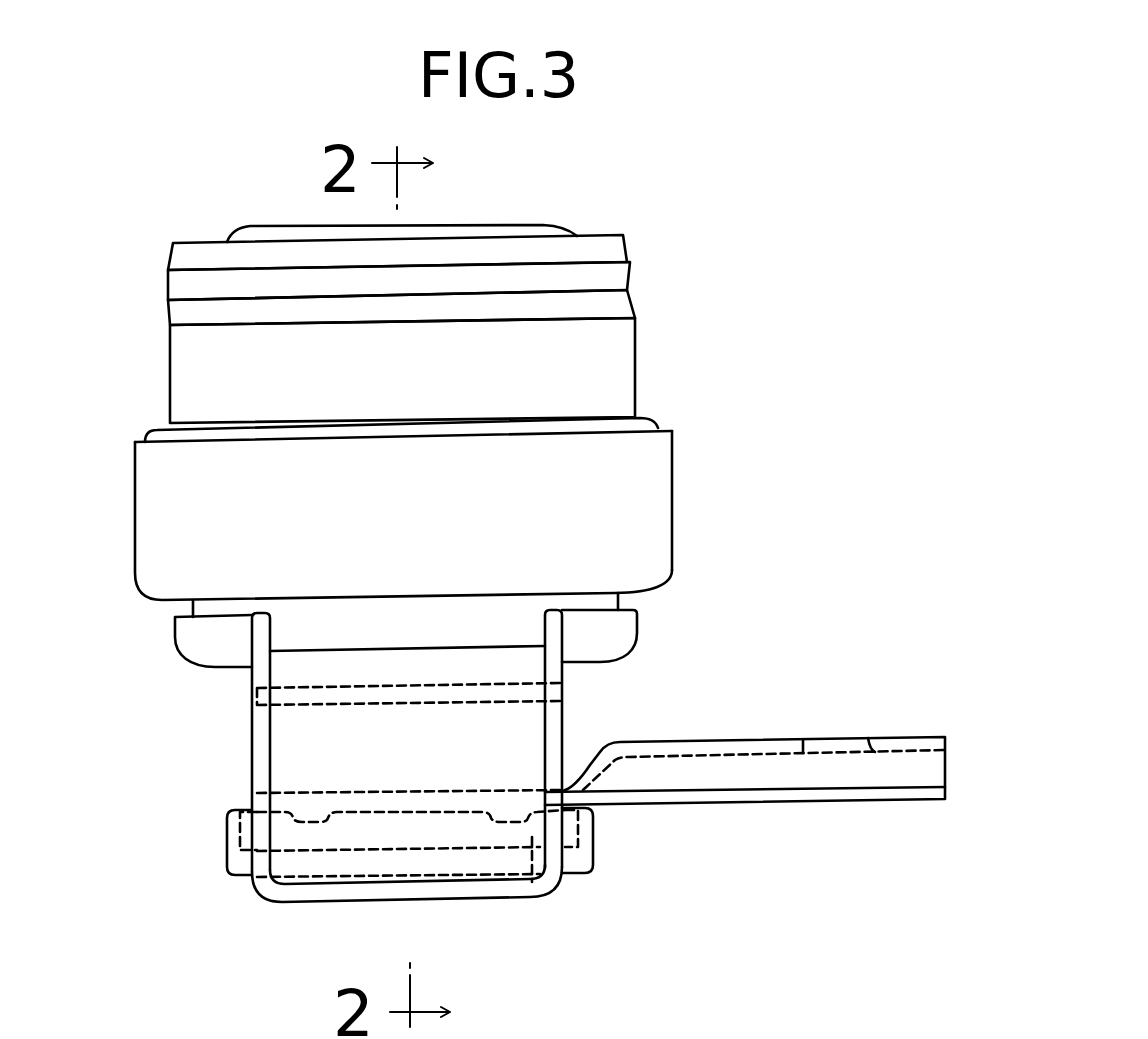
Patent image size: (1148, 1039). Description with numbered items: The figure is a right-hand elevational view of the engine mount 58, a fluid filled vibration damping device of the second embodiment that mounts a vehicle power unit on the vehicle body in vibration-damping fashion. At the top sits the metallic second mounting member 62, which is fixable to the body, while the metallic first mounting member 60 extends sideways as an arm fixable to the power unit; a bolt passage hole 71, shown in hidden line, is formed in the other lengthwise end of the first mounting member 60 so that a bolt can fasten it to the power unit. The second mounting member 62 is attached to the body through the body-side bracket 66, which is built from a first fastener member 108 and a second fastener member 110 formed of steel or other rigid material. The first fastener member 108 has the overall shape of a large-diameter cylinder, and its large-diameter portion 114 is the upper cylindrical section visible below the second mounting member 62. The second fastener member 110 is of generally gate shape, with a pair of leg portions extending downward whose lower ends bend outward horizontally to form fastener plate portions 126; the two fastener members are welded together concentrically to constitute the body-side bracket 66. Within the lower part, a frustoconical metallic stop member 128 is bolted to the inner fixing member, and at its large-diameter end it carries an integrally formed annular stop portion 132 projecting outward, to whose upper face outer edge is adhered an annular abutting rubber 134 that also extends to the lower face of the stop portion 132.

The engine mount 58 is at (742, 231).
The second mounting member 62 is at (653, 410).
The first fastener member 108 is at (121, 443).
The large-diameter portion 114 is at (653, 510).
The body-side bracket 66 is at (166, 645).
The second fastener member 110 is at (647, 628).
The fastener plate portion 126 is at (338, 893).
The stop member 128 is at (465, 870).
The stop portion 132 is at (535, 882).
The abutting rubber 134 is at (583, 807).
The first mounting member 60 is at (722, 721).
The bolt passage hole 71 is at (862, 732).